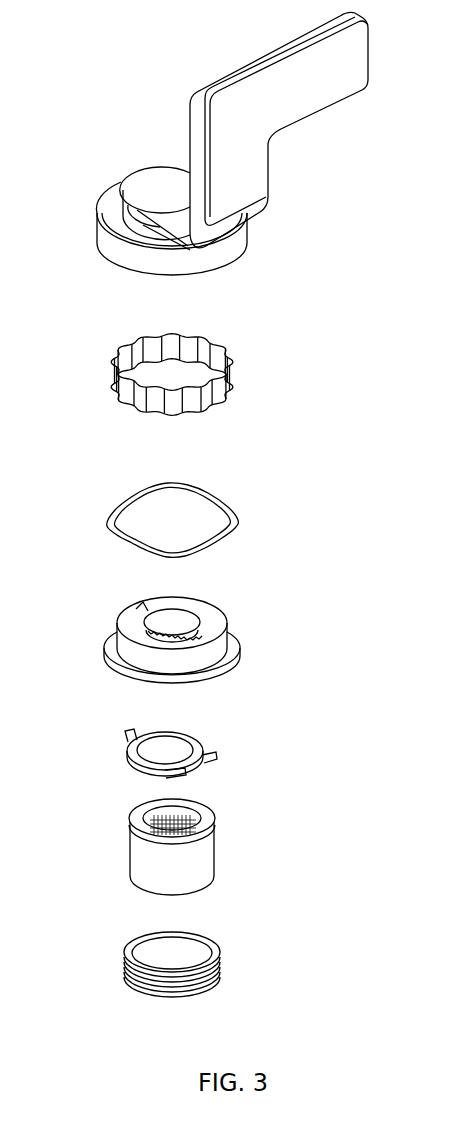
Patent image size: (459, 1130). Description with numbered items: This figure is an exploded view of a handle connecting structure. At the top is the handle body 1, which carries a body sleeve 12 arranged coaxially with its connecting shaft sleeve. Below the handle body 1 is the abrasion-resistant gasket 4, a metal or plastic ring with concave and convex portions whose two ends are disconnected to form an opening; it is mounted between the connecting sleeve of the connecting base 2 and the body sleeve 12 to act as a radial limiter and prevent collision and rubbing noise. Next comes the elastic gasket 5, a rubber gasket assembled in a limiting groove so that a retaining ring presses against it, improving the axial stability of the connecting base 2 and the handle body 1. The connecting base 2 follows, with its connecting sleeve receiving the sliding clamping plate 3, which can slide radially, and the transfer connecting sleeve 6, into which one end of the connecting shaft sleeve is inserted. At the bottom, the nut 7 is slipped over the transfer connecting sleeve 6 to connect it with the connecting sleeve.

The handle body 1 is at (165, 138).
The body sleeve 12 is at (110, 245).
The abrasion-resistant gasket 4 is at (236, 372).
The elastic gasket 5 is at (117, 502).
The connecting base 2 is at (110, 627).
The sliding clamping plate 3 is at (130, 767).
The transfer connecting sleeve 6 is at (127, 852).
The nut 7 is at (128, 978).